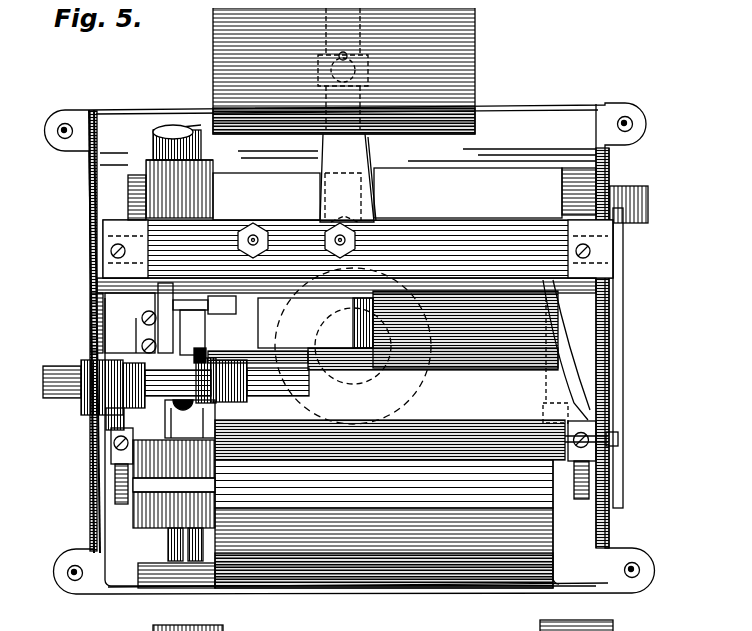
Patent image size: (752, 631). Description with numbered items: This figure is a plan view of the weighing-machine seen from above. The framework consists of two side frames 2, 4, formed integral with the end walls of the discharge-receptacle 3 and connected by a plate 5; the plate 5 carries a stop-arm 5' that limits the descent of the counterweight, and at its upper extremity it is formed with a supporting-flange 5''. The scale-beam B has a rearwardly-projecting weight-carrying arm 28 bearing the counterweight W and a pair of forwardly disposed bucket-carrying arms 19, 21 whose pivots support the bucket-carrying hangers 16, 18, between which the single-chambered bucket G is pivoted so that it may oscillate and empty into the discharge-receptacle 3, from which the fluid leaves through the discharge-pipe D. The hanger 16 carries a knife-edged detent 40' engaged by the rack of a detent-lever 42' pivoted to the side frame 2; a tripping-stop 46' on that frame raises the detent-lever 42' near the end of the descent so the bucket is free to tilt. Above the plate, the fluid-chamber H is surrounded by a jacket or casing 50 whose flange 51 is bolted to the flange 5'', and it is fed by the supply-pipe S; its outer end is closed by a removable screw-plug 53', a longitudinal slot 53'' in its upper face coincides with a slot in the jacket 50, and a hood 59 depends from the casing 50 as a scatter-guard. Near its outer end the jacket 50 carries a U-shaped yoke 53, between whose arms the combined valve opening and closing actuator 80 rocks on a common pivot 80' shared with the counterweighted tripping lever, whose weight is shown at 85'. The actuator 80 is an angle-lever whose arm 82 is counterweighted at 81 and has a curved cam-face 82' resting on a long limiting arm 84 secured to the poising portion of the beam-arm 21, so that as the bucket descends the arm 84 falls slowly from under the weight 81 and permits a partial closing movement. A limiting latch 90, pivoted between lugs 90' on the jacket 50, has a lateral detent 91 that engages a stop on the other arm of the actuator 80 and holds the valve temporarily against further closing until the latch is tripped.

The counterweight W is at (222, 66).
The plate 5 is at (404, 152).
The stop-arm 5' is at (361, 178).
The supporting-flange 5'' is at (485, 173).
The flange 51 is at (356, 200).
The weight-carrying arm 28 is at (326, 144).
The tripping-stop 46' is at (637, 211).
The scale-beam B is at (355, 246).
The jacket or casing 50 is at (196, 191).
The supply-pipe S is at (177, 134).
The fluid-chamber H is at (200, 151).
The side frame 4 is at (84, 300).
The bracket or lug 90' is at (181, 323).
The limiting arm 84 is at (136, 330).
The bucket-carrying arm 21 is at (134, 340).
The limiting latch or stop 90 is at (183, 318).
The limiting stop-arm or detent 91 is at (198, 348).
The cam-face 82' is at (290, 330).
The discharge-pipe D is at (372, 373).
The hood 59 is at (330, 322).
The weight 85' is at (83, 380).
The valve opening and closing actuator 80 is at (154, 385).
The common pivot 80' is at (260, 381).
The yoke 53 is at (88, 412).
The arm 82 is at (190, 419).
The longitudinal slot 53'' is at (224, 389).
The side frame 2 is at (601, 310).
The bucket-carrying arm 19 is at (563, 386).
The detent-lever 42' is at (639, 389).
The detent 40' is at (436, 440).
The bucket-carrying hanger 16 is at (572, 492).
The bucket-carrying hanger 18 is at (114, 496).
The counterweight 81 is at (176, 487).
The screw-plug 53' is at (159, 546).
The bucket G is at (348, 524).
The discharge-receptacle 3 is at (420, 584).